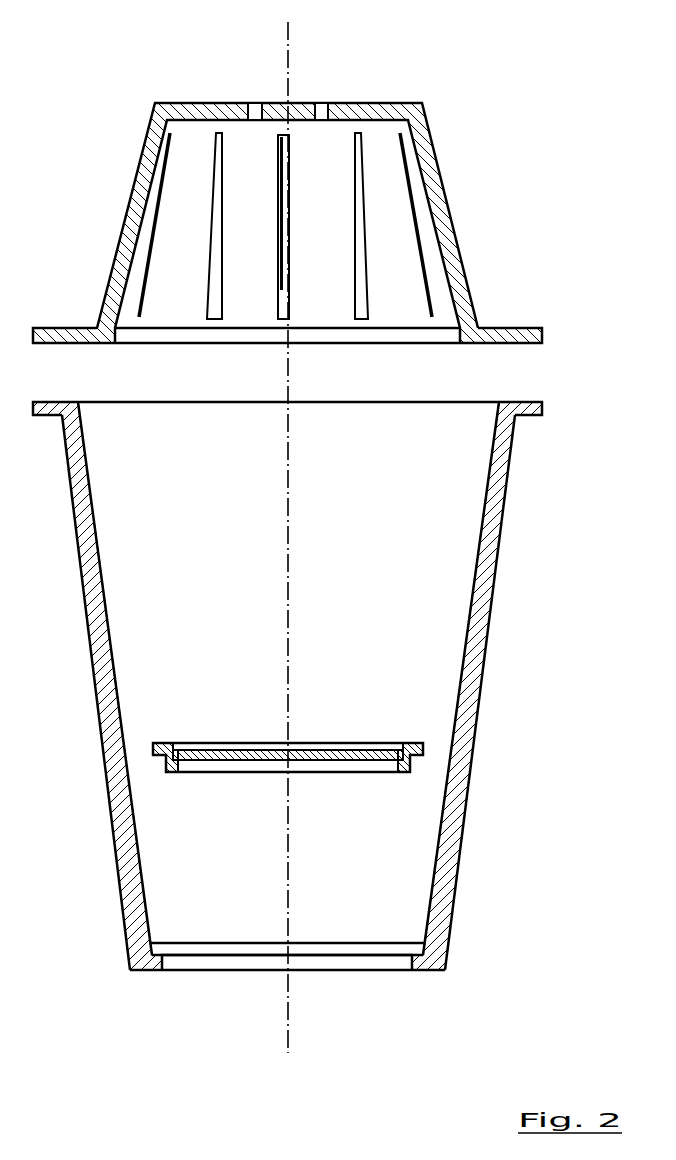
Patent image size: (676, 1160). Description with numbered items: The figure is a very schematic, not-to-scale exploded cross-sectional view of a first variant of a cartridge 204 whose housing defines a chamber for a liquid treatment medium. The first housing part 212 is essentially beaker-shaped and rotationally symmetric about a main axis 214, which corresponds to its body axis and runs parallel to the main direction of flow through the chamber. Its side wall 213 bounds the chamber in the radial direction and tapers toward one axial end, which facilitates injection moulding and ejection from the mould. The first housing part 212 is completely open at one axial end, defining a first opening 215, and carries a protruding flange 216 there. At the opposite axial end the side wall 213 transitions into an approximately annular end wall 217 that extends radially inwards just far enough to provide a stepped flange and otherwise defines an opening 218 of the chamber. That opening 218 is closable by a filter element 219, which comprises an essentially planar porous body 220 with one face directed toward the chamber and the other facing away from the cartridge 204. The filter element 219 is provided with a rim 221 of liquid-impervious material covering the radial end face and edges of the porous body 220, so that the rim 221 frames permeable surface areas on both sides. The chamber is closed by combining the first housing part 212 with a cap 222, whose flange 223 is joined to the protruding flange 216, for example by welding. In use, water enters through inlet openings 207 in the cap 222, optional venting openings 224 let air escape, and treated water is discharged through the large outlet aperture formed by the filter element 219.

The cartridge 204 is at (309, 184).
The main axis 214 is at (288, 62).
The venting openings 224 is at (322, 103).
The cap 222 is at (462, 153).
The inlet openings 207 is at (360, 258).
The flange 223 is at (518, 330).
The first opening 215 is at (413, 388).
The protruding flange 216 is at (535, 402).
The first housing part 212 is at (320, 660).
The side wall 213 is at (483, 697).
The filter element 219 is at (311, 733).
The porous body 220 is at (205, 750).
The rim 221 is at (420, 743).
The opening 218 is at (320, 930).
The end wall 217 is at (432, 960).